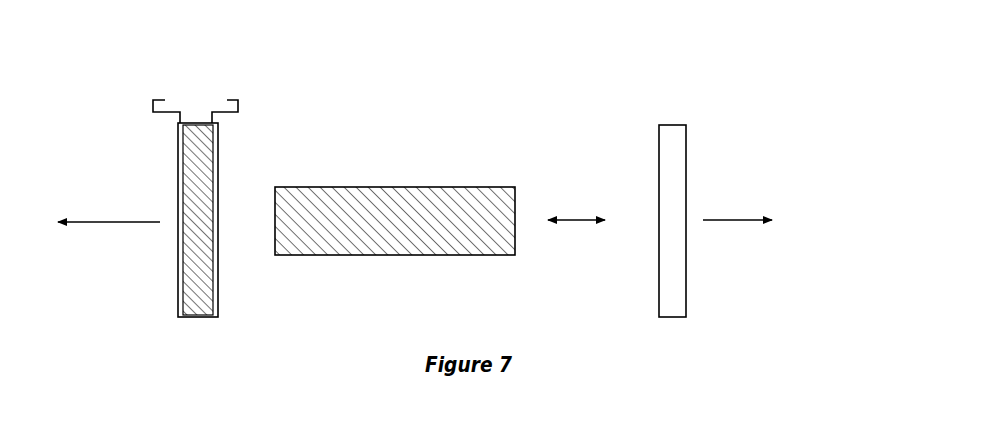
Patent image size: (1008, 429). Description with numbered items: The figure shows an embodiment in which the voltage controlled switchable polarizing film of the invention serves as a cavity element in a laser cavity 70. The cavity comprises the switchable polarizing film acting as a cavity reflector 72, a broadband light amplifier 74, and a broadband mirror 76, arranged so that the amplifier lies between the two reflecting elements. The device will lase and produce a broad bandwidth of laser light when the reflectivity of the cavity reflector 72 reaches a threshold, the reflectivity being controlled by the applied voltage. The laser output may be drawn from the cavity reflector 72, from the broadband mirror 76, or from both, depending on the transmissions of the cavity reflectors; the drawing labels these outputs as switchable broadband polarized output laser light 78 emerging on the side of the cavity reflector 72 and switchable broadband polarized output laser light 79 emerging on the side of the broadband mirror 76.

The laser cavity 70 is at (590, 45).
The cavity reflector 72 is at (215, 162).
The broadband light amplifier 74 is at (407, 187).
The broadband mirror 76 is at (686, 167).
The switchable broadband polarized output laser light (left) 78 is at (98, 222).
The switchable broadband polarized output laser light (right) 79 is at (775, 257).